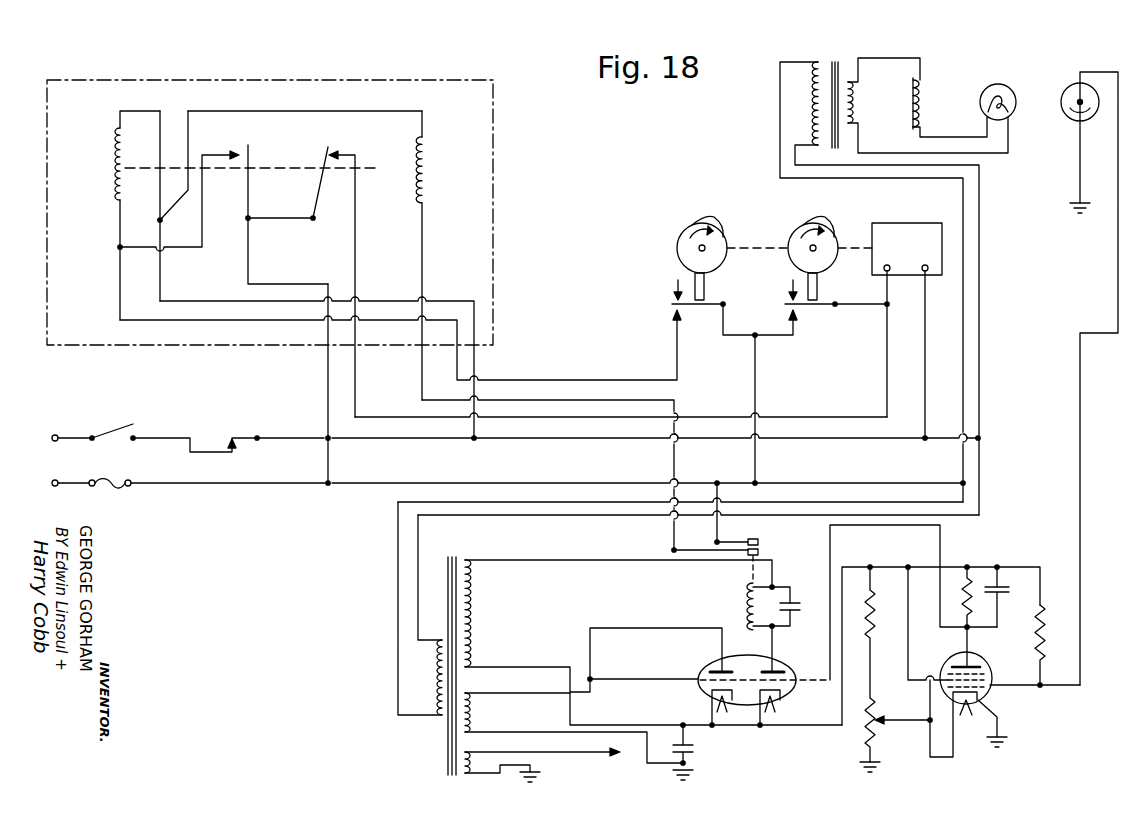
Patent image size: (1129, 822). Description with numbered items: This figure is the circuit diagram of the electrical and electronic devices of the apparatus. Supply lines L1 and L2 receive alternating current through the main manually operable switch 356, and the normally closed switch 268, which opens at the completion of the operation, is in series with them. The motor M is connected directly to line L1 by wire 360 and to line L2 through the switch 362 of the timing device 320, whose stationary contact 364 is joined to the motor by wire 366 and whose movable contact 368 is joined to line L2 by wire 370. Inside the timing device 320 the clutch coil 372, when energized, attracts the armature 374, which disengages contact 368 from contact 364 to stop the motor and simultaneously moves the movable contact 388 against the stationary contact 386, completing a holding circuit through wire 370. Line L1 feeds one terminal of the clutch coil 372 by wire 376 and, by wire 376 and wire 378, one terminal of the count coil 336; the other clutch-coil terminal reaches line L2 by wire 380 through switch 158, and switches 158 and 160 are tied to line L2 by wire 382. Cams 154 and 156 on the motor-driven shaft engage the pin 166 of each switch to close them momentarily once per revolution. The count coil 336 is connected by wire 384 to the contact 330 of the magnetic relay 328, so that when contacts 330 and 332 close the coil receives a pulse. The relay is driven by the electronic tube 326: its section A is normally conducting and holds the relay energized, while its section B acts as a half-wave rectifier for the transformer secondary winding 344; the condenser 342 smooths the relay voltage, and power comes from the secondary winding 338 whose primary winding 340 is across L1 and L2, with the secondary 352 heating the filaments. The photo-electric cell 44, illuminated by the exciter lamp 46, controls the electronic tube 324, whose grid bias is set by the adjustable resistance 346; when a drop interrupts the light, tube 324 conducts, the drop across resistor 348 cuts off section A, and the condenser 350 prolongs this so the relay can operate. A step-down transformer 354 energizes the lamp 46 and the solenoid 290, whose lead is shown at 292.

The timing device 320 is at (500, 167).
The clutch coil 372 is at (112, 195).
The stationary contact 386 is at (179, 206).
The contact 378 is at (240, 111).
The movable contact 388 is at (250, 145).
The armature 374 is at (275, 168).
The movable contact 368 is at (330, 147).
The stationary contact 364 is at (340, 148).
The switch 362 is at (333, 160).
The count coil 336 is at (430, 178).
The wire 370 is at (325, 379).
The wire 376 is at (495, 352).
The wire 380 is at (642, 380).
The wire 384 is at (518, 402).
The wire 366 is at (586, 417).
The wire 382 is at (753, 378).
The main switch 356 is at (115, 424).
The switch 268 is at (246, 444).
The supply line L1 is at (512, 440).
The supply line L2 is at (545, 483).
The cam 154 is at (712, 222).
The cam 156 is at (823, 222).
The pin 166 is at (706, 288).
The switch 158 is at (670, 304).
The switch 160 is at (784, 304).
The motor M is at (905, 223).
The wire 360 is at (924, 357).
The step-down transformer 354 is at (834, 62).
The solenoid 290 is at (922, 94).
The solenoid lead 292 is at (915, 128).
The exciter lamp 46 is at (1000, 84).
The photo-electric cell 44 is at (1080, 83).
The primary winding 340 is at (436, 693).
The transformer secondary winding 338 is at (476, 605).
The transformer secondary winding 344 is at (478, 705).
The transformer secondary 352 is at (478, 762).
The contact 332 is at (753, 539).
The contact 330 is at (760, 552).
The magnetic relay 328 is at (745, 615).
The condenser 342 is at (795, 600).
The electronic tube 326 is at (696, 692).
The section of tube A is at (790, 672).
The section of tube B is at (700, 672).
The adjustable resistance 346 is at (877, 725).
The resistor 348 is at (970, 580).
The condenser 350 is at (1001, 586).
The electronic tube 324 is at (984, 664).